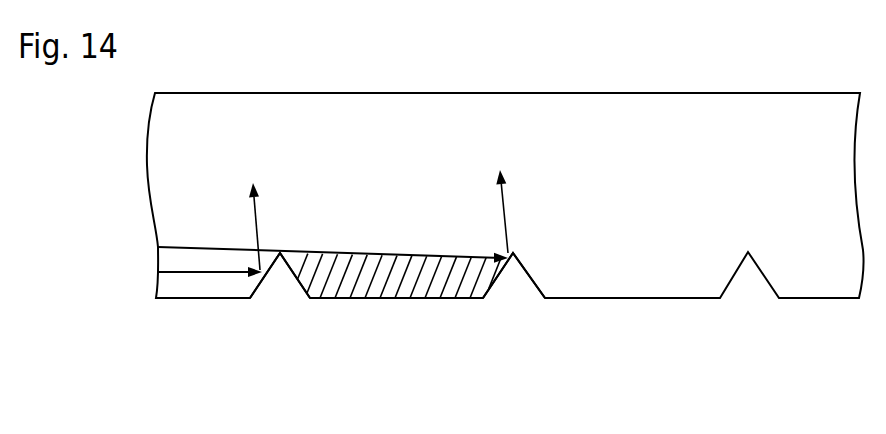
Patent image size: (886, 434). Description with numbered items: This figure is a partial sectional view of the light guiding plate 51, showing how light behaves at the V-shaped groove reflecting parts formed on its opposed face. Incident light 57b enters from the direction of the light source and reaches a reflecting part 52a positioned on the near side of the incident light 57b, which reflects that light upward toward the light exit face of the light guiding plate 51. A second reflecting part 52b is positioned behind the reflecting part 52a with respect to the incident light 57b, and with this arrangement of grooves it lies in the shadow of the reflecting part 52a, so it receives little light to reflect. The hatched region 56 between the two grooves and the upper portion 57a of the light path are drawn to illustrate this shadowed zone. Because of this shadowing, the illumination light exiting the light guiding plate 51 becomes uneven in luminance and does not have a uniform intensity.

The light guiding plate 51 is at (687, 235).
The reflecting part 52a is at (280, 312).
The reflecting part 52b is at (517, 312).
The adhesive layer 56 is at (371, 296).
The upper layer 57a is at (197, 247).
The incident light 57b is at (192, 273).